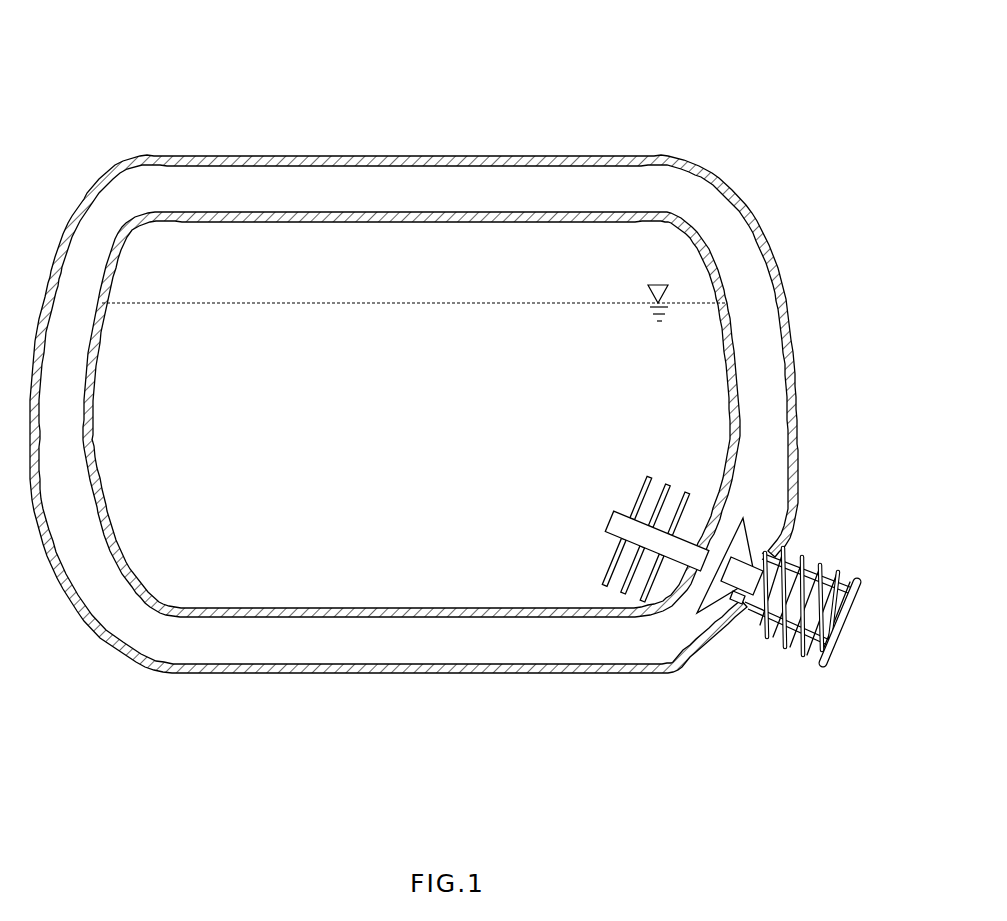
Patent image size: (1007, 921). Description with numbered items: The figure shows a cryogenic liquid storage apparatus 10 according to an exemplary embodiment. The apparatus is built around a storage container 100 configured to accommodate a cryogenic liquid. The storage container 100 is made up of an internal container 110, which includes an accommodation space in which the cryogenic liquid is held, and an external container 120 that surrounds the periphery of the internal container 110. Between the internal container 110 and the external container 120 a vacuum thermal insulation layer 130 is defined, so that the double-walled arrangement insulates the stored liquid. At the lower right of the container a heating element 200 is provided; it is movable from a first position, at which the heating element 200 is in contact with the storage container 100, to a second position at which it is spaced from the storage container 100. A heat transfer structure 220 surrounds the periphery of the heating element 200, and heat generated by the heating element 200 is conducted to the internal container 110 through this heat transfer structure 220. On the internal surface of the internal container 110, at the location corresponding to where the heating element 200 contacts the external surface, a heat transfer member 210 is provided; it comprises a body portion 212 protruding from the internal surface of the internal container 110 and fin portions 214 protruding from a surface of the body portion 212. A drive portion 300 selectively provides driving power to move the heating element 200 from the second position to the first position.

The cryogenic liquid storage apparatus 10 is at (76, 31).
The storage container 100 is at (93, 157).
The internal container 110 is at (322, 212).
The external container 120 is at (408, 157).
The vacuum thermal insulation layer 130 is at (492, 190).
The heating element 200 is at (749, 548).
The heat transfer member 210 is at (685, 727).
The body portion 212 is at (681, 550).
The fin portions 214 is at (618, 563).
The heat transfer structure 220 is at (745, 524).
The drive portion 300 is at (768, 645).